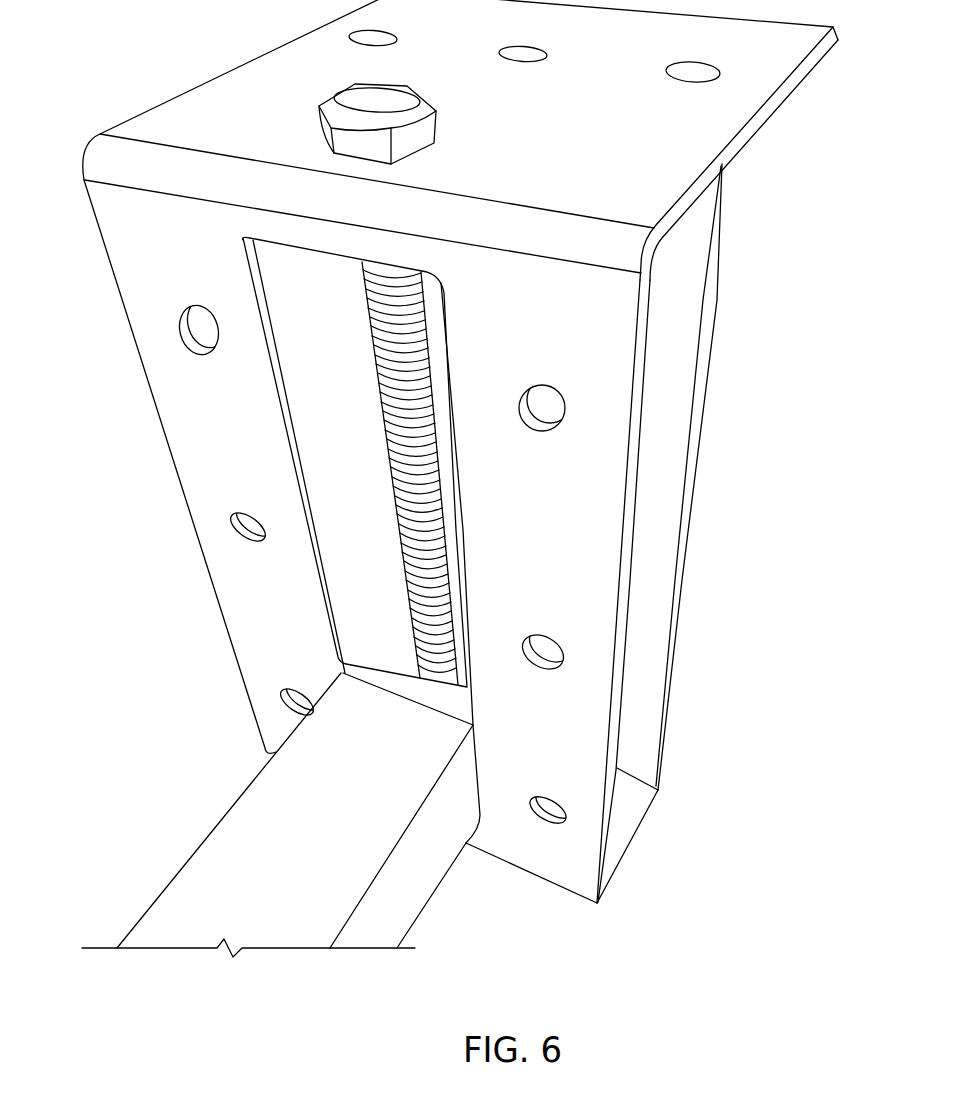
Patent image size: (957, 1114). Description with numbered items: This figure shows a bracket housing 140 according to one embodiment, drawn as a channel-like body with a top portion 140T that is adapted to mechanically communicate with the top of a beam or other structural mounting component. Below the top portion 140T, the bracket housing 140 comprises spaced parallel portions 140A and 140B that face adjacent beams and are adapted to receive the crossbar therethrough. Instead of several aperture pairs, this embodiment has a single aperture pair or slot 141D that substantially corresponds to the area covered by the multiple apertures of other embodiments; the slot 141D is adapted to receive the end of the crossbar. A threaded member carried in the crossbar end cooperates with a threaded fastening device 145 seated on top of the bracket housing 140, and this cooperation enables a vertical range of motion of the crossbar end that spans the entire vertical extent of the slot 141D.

The bracket housing 140 is at (553, 540).
The top portion 140T is at (738, 115).
The spaced parallel portion 140A is at (615, 793).
The spaced parallel portion 140B is at (677, 623).
The slot 141D is at (310, 583).
The threaded fastening device 145 is at (386, 100).